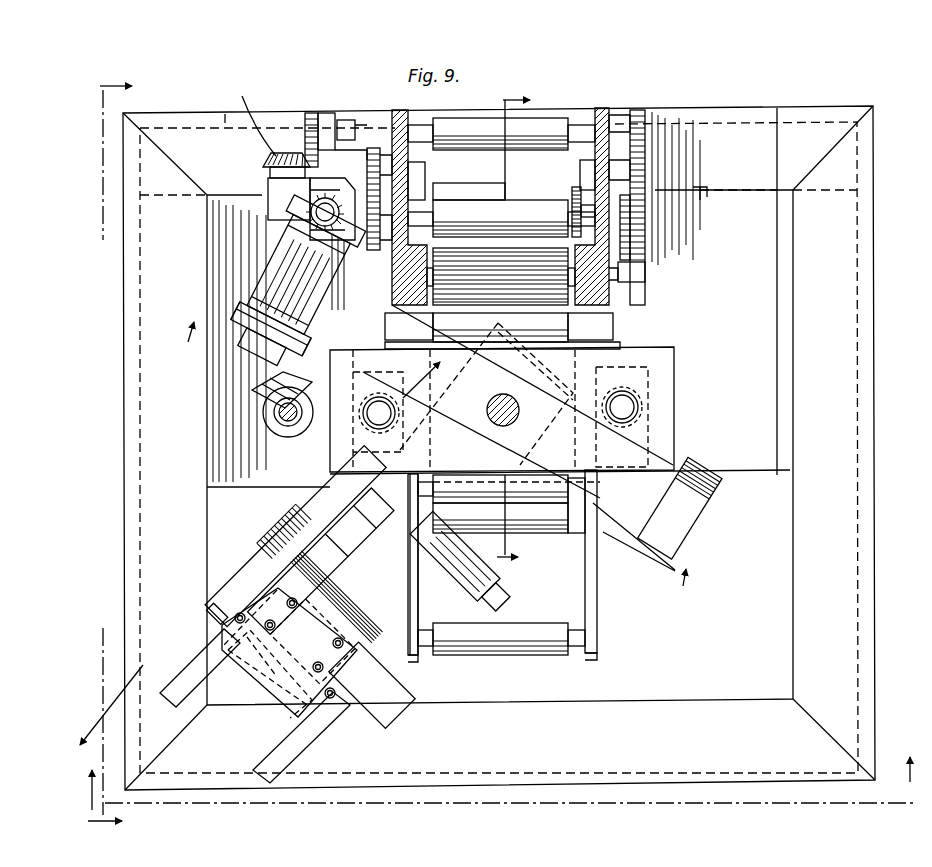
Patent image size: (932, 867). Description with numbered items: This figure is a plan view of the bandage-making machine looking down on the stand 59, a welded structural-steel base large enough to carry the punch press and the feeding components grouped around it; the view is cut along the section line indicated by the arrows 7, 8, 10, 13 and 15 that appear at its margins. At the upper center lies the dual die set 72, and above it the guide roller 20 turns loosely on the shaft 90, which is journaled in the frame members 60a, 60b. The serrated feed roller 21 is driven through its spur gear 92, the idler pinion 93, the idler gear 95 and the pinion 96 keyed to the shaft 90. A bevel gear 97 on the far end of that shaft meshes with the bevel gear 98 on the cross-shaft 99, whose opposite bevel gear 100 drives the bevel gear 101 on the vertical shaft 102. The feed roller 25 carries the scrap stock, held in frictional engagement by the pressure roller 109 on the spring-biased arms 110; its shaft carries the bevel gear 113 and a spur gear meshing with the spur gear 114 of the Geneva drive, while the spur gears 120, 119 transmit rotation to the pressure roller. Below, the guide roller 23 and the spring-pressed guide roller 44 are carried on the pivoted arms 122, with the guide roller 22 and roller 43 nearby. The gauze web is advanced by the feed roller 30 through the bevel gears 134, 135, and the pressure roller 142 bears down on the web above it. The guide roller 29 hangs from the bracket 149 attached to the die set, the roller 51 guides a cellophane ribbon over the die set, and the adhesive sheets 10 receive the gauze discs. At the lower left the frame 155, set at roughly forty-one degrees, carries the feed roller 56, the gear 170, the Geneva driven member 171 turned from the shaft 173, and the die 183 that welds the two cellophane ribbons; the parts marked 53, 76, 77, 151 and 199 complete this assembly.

The stand 59 is at (875, 370).
The section line 7- 7 is at (492, 778).
The section line 8- 8 is at (104, 447).
The adhesive sheets 10 is at (526, 335).
The view direction 13 is at (451, 459).
The view direction 15 is at (261, 552).
The guide roller 20 is at (501, 134).
The serrated feed roller 21 is at (640, 297).
The lower roller 22 is at (550, 330).
The guide roller 23 is at (553, 490).
The feed roller 25 is at (480, 197).
The guide roller 29 is at (700, 510).
The feed roller 30 is at (288, 277).
The bottom roller 43 is at (527, 652).
The guide roller 44 is at (560, 581).
The guide roller 51 is at (520, 410).
The striped guide 53 is at (337, 597).
The feed roller 56 is at (384, 592).
The frame member 60a is at (398, 118).
The frame member 60b is at (627, 117).
The dual die set 72 is at (678, 368).
The left bushing 76 is at (388, 418).
The right bushing 77 is at (634, 398).
The shaft 90 is at (420, 128).
The spur gear 92 is at (646, 273).
The idler pinion 93 is at (648, 226).
The idler gear 95 is at (700, 196).
The pinion 96 is at (645, 113).
The bevel gear 97 is at (309, 114).
The bevel gear 98 is at (249, 116).
The cross-shaft 99 is at (258, 262).
The bevel gear 100 is at (252, 395).
The bevel gear 101 is at (262, 412).
The vertical shaft 102 is at (285, 420).
The pressure roller 109 is at (501, 218).
The arms 110 is at (420, 172).
The bevel gear 113 is at (290, 145).
The spur gear 114 is at (358, 175).
The spur gear 119 is at (574, 186).
The spur gear 120 is at (572, 208).
The arms 122 is at (585, 488).
The bevel gear 134 is at (310, 205).
The bevel gear 135 is at (320, 214).
The pressure roller 142 is at (265, 285).
The bracket 149 is at (677, 466).
The side bar 151 is at (408, 550).
The frame 155 is at (178, 672).
The gear 170 is at (272, 538).
The driven member 171 is at (265, 515).
The shaft 173 is at (361, 500).
The die 183 is at (290, 712).
The flange 199 is at (250, 318).